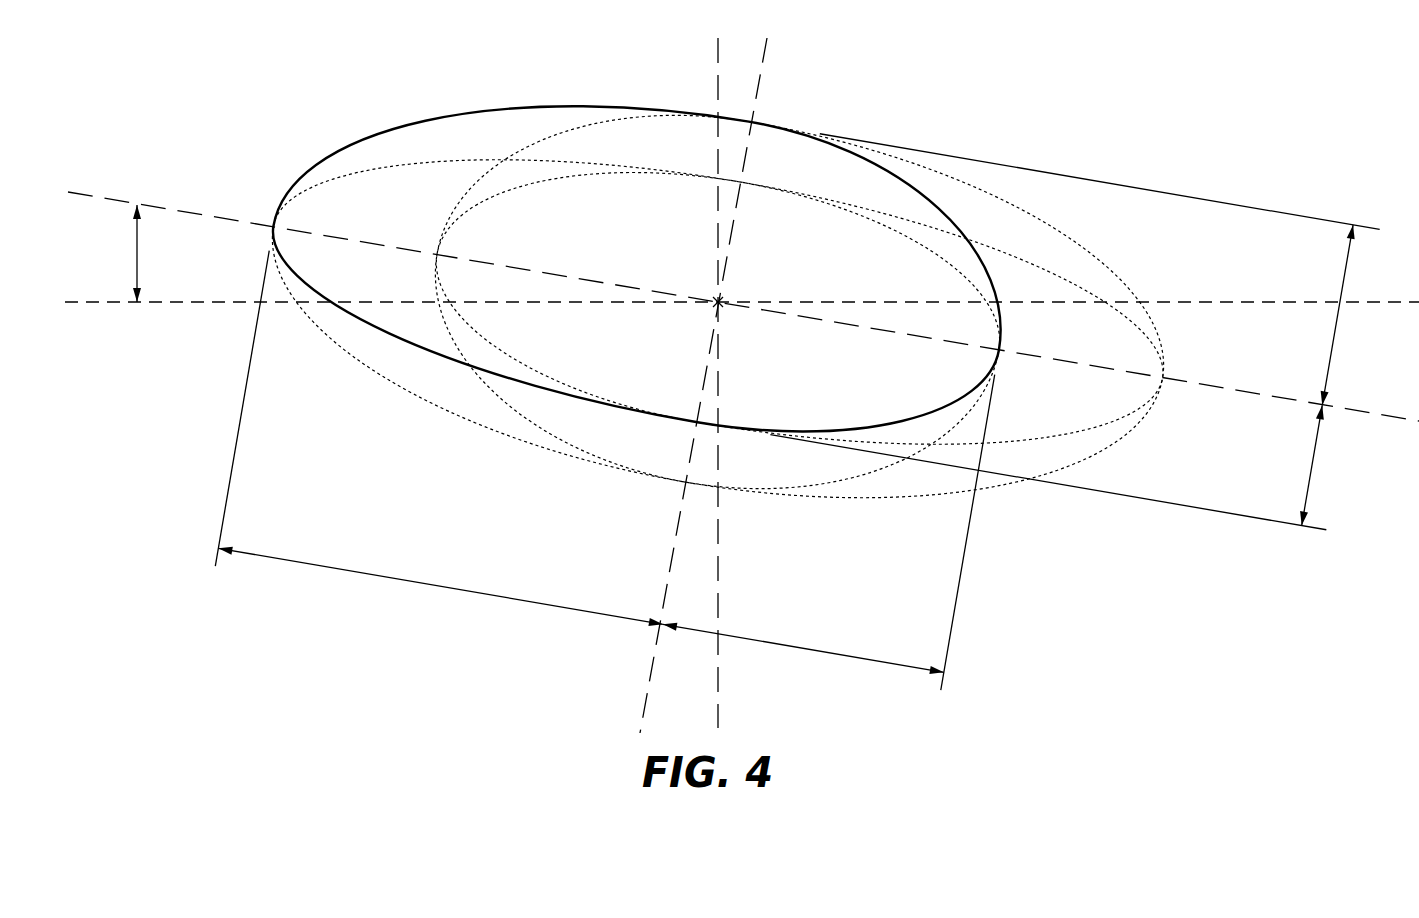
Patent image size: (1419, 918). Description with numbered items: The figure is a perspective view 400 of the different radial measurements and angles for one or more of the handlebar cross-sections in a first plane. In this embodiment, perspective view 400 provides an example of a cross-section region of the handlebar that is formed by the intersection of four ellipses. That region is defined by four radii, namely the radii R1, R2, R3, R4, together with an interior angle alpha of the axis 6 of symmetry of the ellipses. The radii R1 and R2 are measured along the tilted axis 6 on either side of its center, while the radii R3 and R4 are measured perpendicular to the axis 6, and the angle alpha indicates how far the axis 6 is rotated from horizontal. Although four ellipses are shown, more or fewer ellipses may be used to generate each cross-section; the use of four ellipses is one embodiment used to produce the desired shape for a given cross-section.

The perspective view 400 is at (209, 98).
The axis of symmetry 6 is at (743, 307).
The first radius R1 is at (464, 446).
The second radius R2 is at (827, 508).
The third radius R3 is at (1059, 421).
The fourth radius R4 is at (1084, 272).